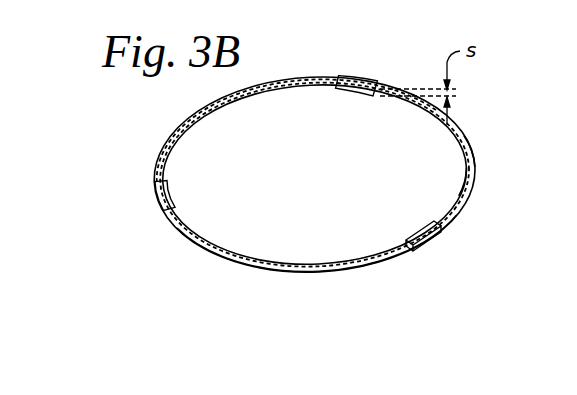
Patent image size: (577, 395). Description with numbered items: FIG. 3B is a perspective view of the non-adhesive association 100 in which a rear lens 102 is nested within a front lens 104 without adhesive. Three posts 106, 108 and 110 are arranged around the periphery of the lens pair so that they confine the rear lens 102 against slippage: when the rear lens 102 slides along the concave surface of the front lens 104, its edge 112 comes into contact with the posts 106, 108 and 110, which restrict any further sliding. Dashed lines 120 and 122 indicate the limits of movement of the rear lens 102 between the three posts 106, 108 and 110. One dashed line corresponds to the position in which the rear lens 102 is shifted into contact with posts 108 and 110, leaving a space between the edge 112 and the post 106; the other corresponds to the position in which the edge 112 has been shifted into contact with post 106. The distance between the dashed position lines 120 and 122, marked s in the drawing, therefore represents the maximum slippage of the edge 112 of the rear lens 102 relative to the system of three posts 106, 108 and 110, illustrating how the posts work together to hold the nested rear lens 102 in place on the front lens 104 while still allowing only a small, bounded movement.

The non-adhesive association 100 is at (205, 318).
The rear lens 102 is at (207, 212).
The front lens 104 is at (285, 270).
The post 106 is at (357, 76).
The post 108 is at (160, 192).
The post 110 is at (432, 235).
The edge 112 is at (462, 197).
The dashed line 120 is at (462, 170).
The dashed line 122 is at (469, 150).